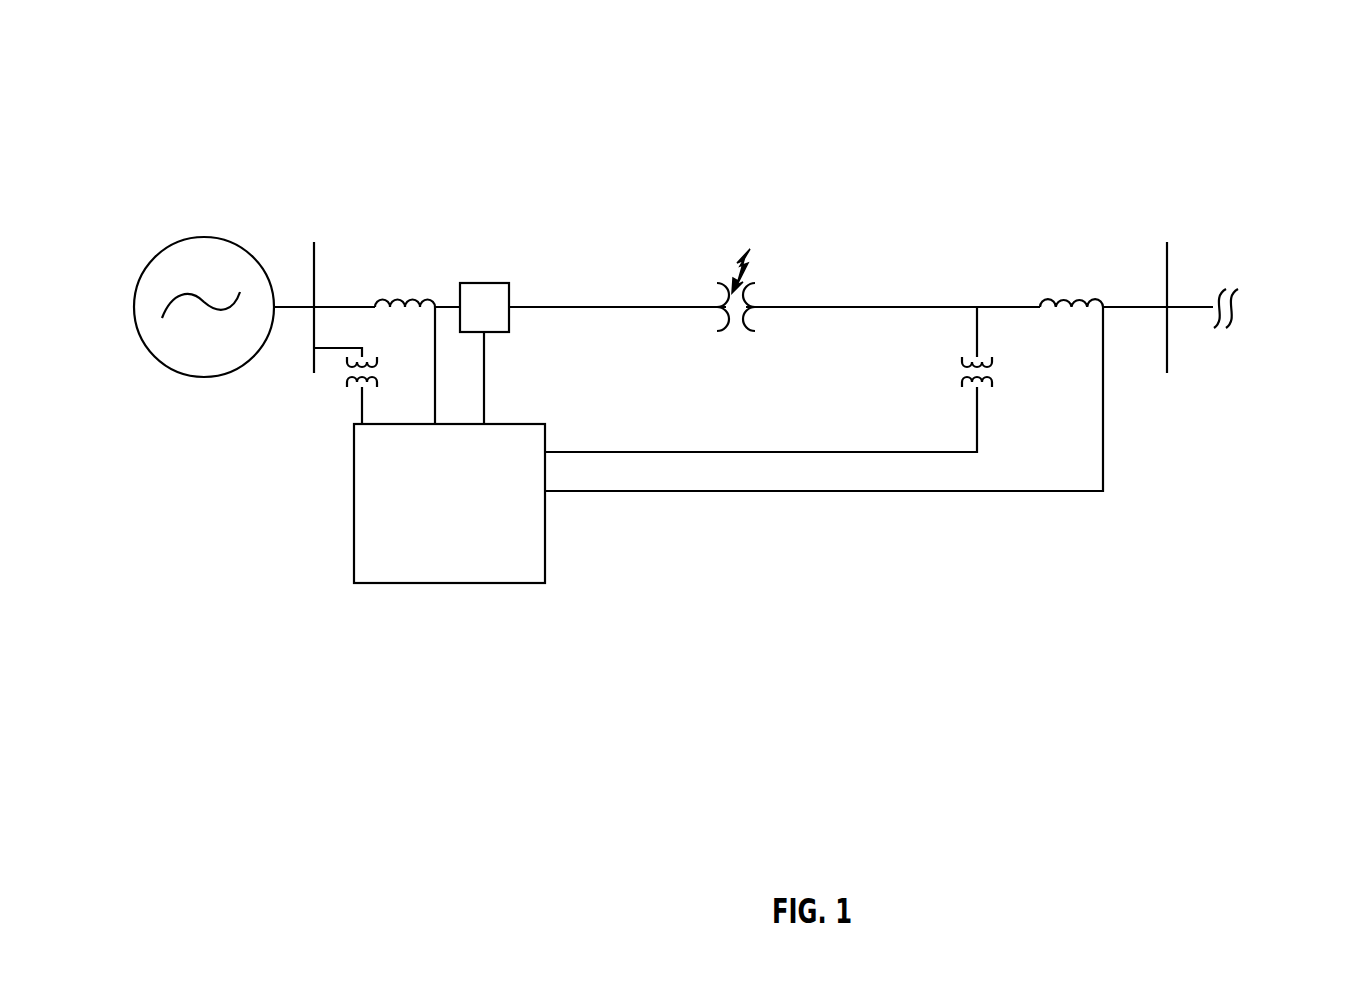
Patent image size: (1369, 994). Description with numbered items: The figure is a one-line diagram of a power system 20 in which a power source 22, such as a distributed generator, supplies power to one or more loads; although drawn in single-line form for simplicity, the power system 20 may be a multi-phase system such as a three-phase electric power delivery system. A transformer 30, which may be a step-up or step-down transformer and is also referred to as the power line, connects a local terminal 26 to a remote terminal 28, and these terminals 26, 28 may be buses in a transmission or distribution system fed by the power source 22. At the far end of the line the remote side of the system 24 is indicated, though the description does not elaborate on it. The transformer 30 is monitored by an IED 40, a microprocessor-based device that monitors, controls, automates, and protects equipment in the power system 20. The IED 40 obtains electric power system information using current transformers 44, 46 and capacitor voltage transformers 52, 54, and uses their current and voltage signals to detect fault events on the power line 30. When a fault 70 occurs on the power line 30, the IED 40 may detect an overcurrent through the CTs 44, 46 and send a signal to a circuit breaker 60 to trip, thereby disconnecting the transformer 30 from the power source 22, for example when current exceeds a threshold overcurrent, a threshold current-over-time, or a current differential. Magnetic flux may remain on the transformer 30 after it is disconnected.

The power system 20 is at (1082, 58).
The power source 22 is at (198, 378).
The load / remote system 24 is at (1298, 365).
The local terminal 26 is at (316, 256).
The remote terminal 28 is at (1170, 258).
The transformer 30 is at (720, 284).
The intelligent electronic device 40 is at (397, 585).
The current transformer 44 is at (390, 298).
The current transformer 46 is at (1070, 300).
The capacitor voltage transformer 52 is at (348, 382).
The capacitor voltage transformer 54 is at (960, 382).
The circuit breaker 60 is at (486, 283).
The fault 70 is at (750, 250).